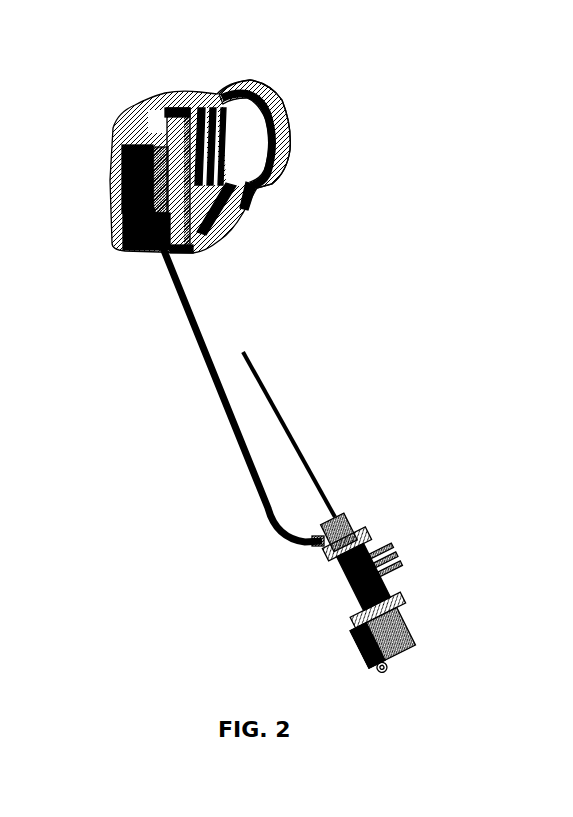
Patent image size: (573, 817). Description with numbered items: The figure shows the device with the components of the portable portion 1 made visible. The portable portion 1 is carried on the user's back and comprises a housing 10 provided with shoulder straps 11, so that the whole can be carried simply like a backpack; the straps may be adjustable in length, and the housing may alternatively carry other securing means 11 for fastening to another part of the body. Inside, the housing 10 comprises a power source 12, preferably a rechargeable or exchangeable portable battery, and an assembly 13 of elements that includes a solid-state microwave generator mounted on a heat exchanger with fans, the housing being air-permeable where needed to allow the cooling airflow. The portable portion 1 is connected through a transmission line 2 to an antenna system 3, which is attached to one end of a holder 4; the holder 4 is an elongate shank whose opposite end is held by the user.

The portable portion 1 is at (300, 111).
The housing 10 is at (180, 107).
The shoulder straps 11 is at (282, 162).
The power source 12 is at (140, 252).
The assembly of elements 13 is at (130, 172).
The transmission line 2 is at (208, 363).
The antenna system 3 is at (417, 565).
The holder 4 is at (297, 435).